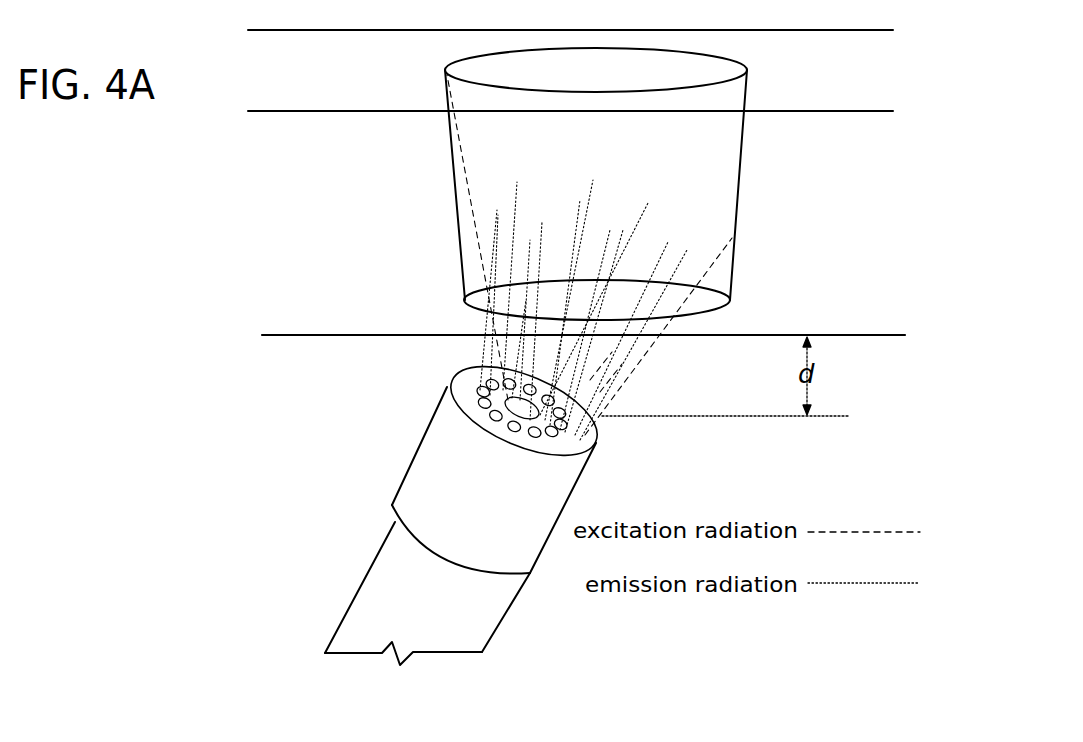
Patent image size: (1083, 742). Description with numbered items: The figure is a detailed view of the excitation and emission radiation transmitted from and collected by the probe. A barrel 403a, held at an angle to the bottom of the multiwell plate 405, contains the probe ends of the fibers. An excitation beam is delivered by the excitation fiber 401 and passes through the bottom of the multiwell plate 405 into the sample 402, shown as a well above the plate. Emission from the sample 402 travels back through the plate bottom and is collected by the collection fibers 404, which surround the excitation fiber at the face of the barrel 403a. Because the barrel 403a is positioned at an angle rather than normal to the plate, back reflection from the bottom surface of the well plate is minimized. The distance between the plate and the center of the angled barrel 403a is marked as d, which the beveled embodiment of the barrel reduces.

The excitation fiber 401 is at (513, 402).
The sample 402 is at (705, 195).
The barrel 403a is at (398, 477).
The collection fibers 404 is at (480, 405).
The multiwell plate 405 is at (781, 85).